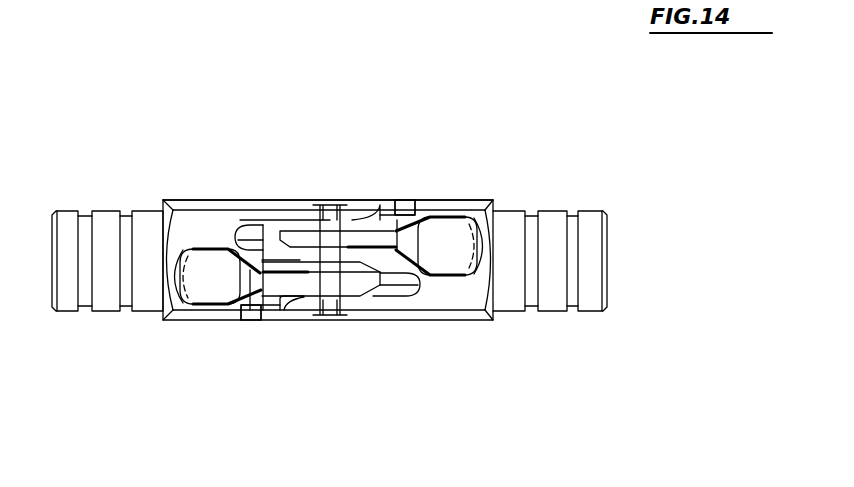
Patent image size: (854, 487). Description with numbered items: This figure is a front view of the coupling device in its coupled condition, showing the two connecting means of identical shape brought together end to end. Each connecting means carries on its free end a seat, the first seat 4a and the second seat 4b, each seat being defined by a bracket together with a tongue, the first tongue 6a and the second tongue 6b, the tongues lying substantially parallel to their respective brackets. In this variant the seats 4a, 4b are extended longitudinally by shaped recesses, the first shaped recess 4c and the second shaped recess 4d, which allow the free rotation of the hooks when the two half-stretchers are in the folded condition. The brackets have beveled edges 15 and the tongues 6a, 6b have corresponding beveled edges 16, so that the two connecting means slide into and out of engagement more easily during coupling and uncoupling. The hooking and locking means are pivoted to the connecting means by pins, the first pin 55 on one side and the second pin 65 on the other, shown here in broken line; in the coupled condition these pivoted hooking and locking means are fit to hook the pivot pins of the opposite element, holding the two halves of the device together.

The first seat 4a is at (396, 284).
The second seat 4b is at (262, 232).
The first shaped recess 4c is at (412, 282).
The second shaped recess 4d is at (248, 236).
The first tongue 6a is at (330, 225).
The second tongue 6b is at (348, 298).
The beveled edges of brackets 15 is at (378, 215).
The beveled edges of tongues 16 is at (298, 222).
The first pin 55 is at (410, 207).
The second pin 65 is at (250, 312).